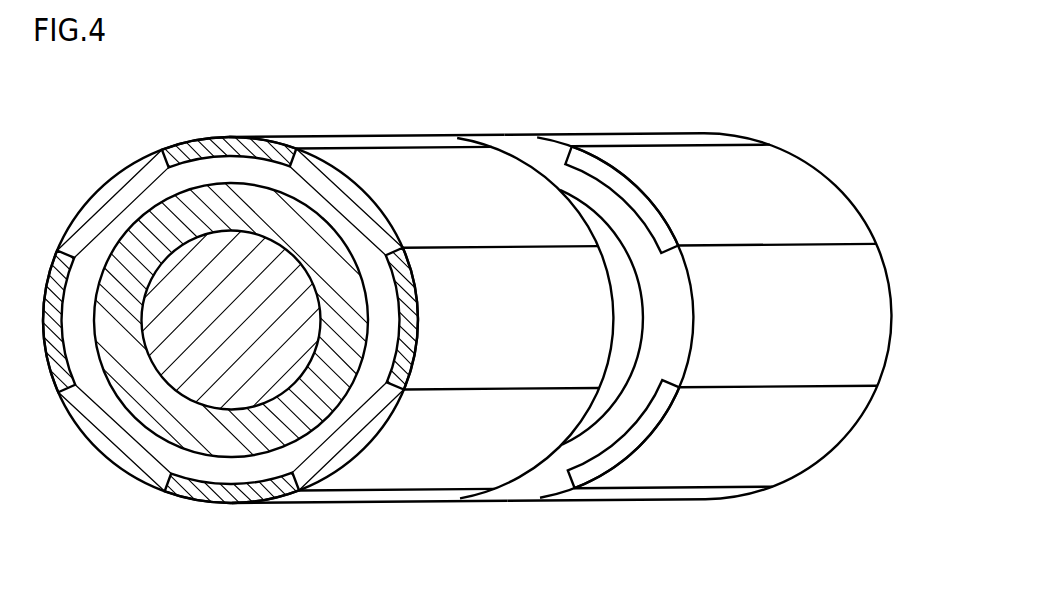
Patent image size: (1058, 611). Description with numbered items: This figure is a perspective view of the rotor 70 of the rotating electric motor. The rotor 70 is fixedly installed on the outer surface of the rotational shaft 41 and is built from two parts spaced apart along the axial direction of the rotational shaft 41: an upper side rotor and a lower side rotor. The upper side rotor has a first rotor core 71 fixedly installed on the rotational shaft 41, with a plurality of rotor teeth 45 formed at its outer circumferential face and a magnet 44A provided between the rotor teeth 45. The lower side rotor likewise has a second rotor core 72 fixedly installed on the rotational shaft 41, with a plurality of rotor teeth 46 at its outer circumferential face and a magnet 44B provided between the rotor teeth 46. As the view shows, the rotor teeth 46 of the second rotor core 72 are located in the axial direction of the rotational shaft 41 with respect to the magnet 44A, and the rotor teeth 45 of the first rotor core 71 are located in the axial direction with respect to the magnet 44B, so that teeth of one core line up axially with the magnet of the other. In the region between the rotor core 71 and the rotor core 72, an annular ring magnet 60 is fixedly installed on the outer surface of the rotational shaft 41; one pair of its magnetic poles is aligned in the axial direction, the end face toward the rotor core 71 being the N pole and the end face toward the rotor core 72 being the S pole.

The rotor 70 is at (552, 86).
The rotational shaft 41 is at (203, 347).
The rotor teeth 45 is at (333, 186).
The rotor core (first rotor core) 71 is at (243, 162).
The rotor core (second rotor core) 72 is at (589, 134).
The magnet 44A is at (471, 287).
The magnet 44B is at (668, 184).
The rotor teeth 46 is at (683, 308).
The annular ring magnet 60 is at (610, 395).